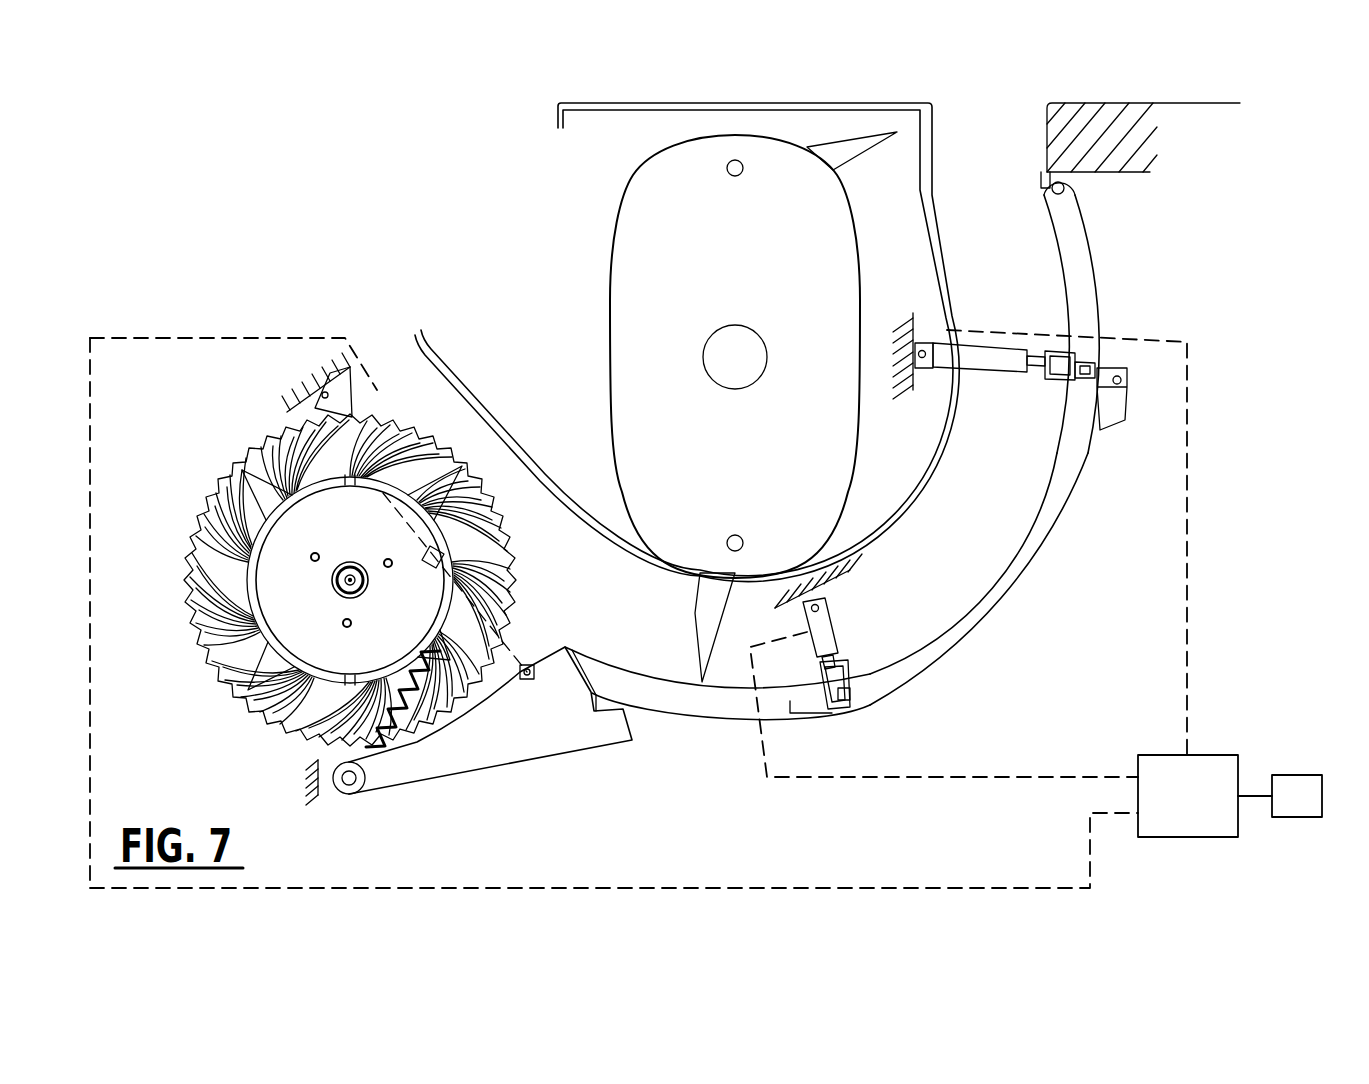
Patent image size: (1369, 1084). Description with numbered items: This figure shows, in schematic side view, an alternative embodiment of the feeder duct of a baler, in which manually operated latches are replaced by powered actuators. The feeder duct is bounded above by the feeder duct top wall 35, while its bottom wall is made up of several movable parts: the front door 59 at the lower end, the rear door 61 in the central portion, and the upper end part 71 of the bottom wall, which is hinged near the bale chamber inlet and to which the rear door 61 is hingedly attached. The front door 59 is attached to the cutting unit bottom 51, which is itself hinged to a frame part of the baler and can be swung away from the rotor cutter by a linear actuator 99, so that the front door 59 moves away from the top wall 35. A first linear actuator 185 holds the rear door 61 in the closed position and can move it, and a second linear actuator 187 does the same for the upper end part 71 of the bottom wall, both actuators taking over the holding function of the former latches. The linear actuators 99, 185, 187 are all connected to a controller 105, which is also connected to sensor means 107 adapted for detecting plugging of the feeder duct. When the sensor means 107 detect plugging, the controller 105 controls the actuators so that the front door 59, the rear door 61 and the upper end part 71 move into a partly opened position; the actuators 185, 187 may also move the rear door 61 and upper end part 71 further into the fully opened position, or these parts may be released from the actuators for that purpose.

The linear actuator 99 is at (385, 403).
The feeder duct top wall 35 is at (953, 298).
The upper end part of the bottom wall 71 is at (1078, 312).
The second linear actuator 187 is at (1030, 376).
The first linear actuator 185 is at (843, 617).
The rear door 61 is at (1003, 593).
The front door 59 is at (702, 702).
The cutting unit bottom 51 is at (490, 767).
The controller 105 is at (1163, 770).
The sensor means 107 is at (1290, 783).